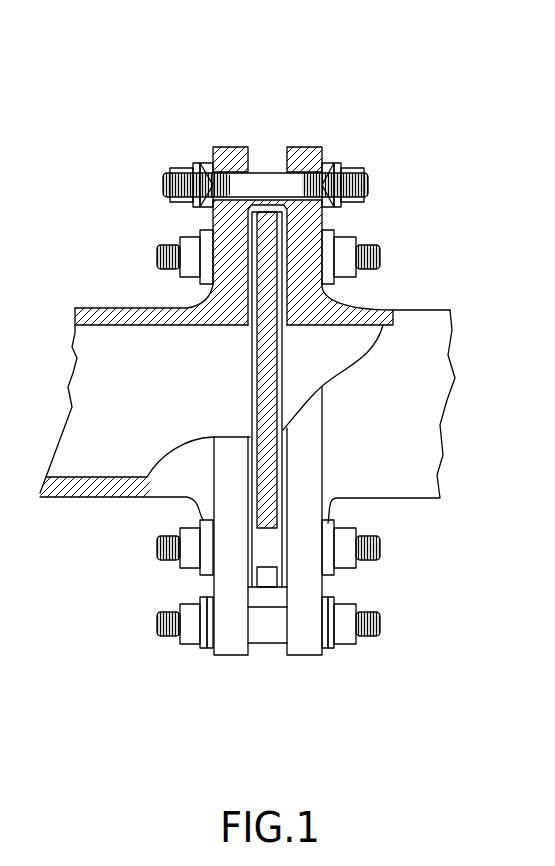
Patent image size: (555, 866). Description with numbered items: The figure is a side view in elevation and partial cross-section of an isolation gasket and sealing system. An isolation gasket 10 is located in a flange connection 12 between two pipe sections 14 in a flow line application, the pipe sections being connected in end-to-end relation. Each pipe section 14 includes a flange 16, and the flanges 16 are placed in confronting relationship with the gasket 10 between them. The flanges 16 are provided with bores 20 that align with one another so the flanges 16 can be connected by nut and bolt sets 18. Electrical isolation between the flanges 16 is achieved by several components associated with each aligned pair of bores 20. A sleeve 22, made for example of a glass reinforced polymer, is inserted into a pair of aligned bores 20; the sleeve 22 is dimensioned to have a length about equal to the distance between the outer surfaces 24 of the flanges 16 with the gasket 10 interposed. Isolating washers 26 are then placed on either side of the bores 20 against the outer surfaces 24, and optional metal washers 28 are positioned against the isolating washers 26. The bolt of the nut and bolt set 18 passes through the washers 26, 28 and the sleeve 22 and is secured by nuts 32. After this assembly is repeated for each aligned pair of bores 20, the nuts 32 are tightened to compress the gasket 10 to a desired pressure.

The isolation gasket 10 is at (258, 490).
The flange connection 12 is at (272, 95).
The pipe sections 14 is at (97, 308).
The flanges 16 is at (232, 586).
The nut and bolt sets 18 is at (405, 177).
The bores 20 is at (230, 160).
The sleeve 22 is at (265, 172).
The outer surfaces 24 is at (212, 212).
The isolating washers 26 is at (196, 163).
The metal washers 28 is at (200, 168).
The nuts 32 is at (200, 603).